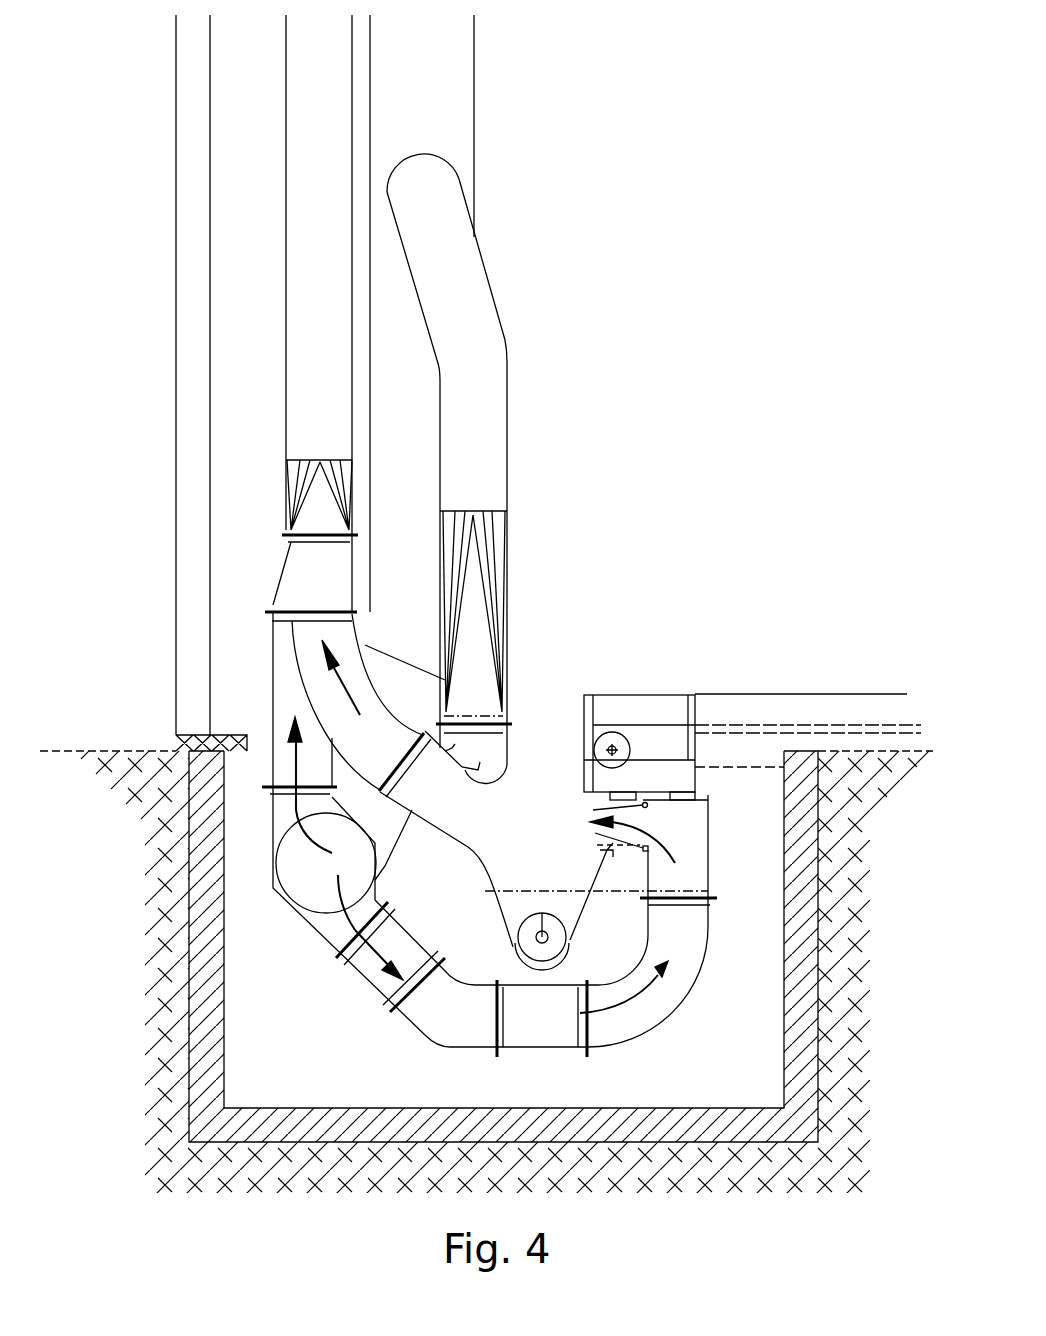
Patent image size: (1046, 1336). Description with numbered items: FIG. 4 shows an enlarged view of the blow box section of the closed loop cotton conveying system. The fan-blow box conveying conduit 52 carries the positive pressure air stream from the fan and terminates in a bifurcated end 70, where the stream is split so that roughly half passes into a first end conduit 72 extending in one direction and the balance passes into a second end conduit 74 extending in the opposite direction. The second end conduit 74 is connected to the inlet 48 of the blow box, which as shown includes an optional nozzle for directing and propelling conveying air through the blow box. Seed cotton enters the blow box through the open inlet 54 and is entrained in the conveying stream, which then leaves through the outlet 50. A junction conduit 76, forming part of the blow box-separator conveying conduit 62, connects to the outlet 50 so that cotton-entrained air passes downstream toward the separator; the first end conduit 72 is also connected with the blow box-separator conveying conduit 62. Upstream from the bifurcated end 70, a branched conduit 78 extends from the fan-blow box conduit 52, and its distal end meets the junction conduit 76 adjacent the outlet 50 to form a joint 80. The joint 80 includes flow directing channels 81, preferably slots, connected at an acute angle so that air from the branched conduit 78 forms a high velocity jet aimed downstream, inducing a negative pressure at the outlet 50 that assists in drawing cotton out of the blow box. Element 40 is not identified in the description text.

The control unit 40 is at (648, 725).
The inlet 48 is at (648, 820).
The outlet 50 is at (495, 832).
The fan-blow box conveying conduit 52 is at (460, 77).
The open inlet 54 is at (523, 642).
The blow box-separator conveying conduit 62 is at (321, 297).
The bifurcated end 70 is at (291, 905).
The first end conduit 72 is at (287, 698).
The second end conduit 74 is at (540, 1027).
The junction conduit 76 is at (397, 756).
The branched conduit 78 is at (485, 403).
The joint 80 is at (477, 785).
The flow directing channels 81 is at (441, 760).